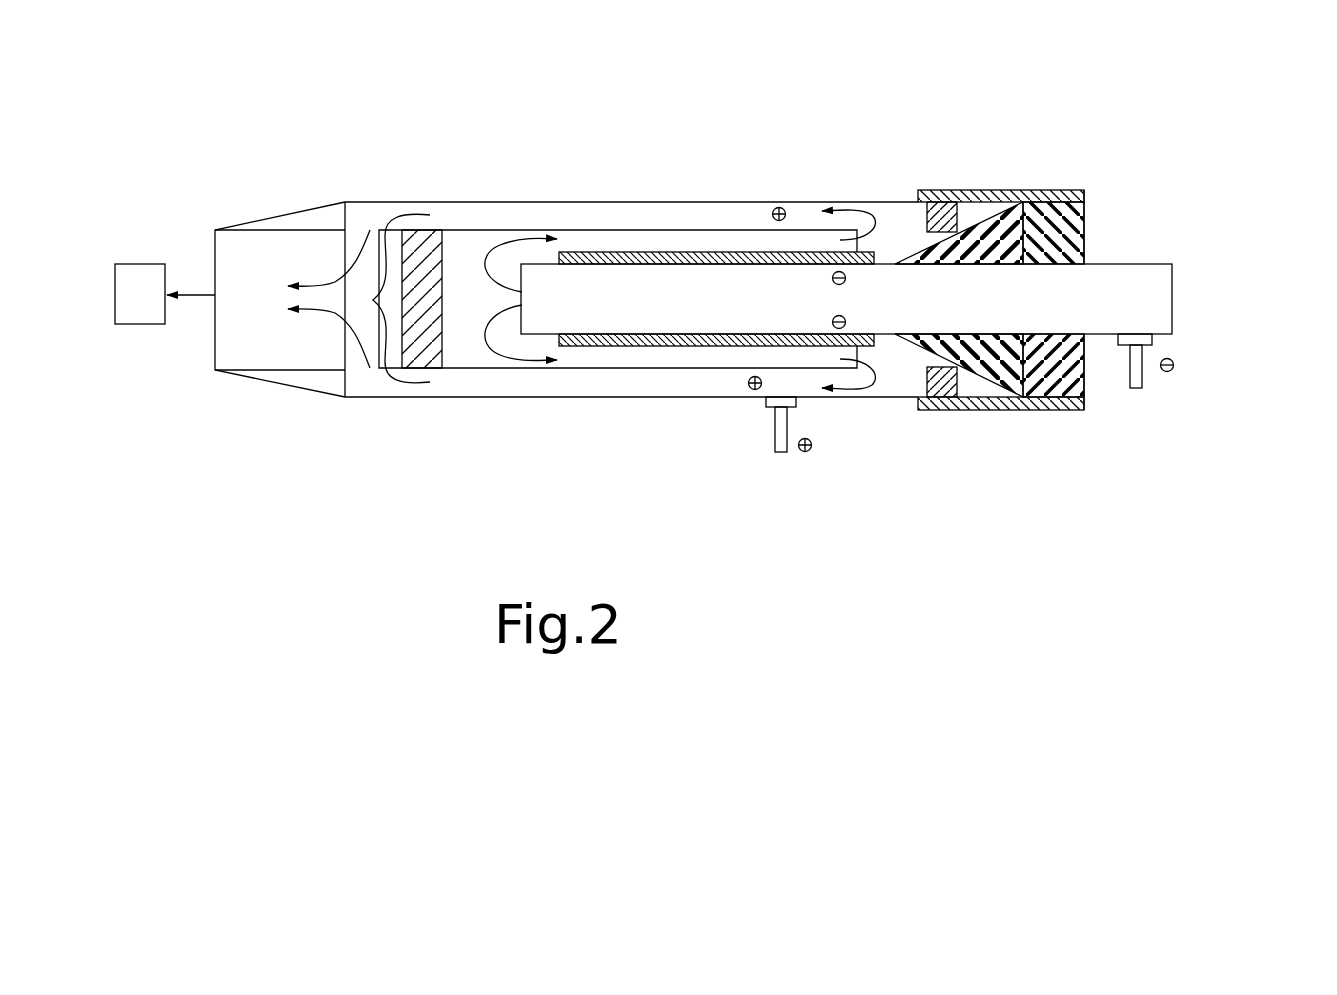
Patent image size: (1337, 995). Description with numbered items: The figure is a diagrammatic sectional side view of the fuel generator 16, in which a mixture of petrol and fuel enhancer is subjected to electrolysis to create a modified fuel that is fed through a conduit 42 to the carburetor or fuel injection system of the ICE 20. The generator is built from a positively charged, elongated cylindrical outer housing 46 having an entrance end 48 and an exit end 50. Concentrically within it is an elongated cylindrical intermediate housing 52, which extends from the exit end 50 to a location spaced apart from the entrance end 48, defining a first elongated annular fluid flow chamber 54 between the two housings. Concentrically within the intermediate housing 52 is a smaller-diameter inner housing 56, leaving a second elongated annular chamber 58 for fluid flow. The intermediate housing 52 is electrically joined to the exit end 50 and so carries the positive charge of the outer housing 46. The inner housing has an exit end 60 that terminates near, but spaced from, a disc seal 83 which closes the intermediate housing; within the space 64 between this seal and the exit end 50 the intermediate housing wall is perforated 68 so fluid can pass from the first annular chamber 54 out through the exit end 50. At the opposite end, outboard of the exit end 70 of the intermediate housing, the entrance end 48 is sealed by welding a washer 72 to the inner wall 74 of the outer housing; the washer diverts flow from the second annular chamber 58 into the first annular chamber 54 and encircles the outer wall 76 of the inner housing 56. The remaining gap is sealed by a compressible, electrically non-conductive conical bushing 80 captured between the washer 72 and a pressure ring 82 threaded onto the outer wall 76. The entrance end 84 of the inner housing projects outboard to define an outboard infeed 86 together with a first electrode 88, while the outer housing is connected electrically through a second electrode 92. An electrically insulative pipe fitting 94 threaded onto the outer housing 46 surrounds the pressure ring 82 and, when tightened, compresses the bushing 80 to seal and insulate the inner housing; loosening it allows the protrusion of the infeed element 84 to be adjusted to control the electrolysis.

The fuel generator 16 is at (527, 170).
The ICE 20 is at (140, 324).
The conduit 42 is at (198, 297).
The outer housing 46 is at (697, 202).
The entrance end 48 is at (900, 214).
The exit end 50 is at (213, 238).
The intermediate housing 52 is at (643, 230).
The first annular fluid flow chamber 54 is at (756, 218).
The inner housing 56 is at (815, 262).
The second annular chamber 58 is at (602, 242).
The exit end of inner housing 60 is at (522, 292).
The space 64 is at (307, 250).
The perforated wall 68 is at (359, 298).
The exit end of intermediate housing 70 is at (885, 238).
The washer 72 is at (955, 190).
The inner wall 74 is at (918, 190).
The outer wall 76 is at (895, 265).
The conical bushing 80 is at (1032, 190).
The pressure ring 82 is at (1085, 193).
The disc seal 83 is at (458, 242).
The entrance end of inner housing 84 is at (1140, 263).
The outboard infeed 86 is at (1202, 307).
The first electrode 88 is at (1142, 375).
The second electrode 92 is at (775, 436).
The pipe fitting 94 is at (1083, 190).